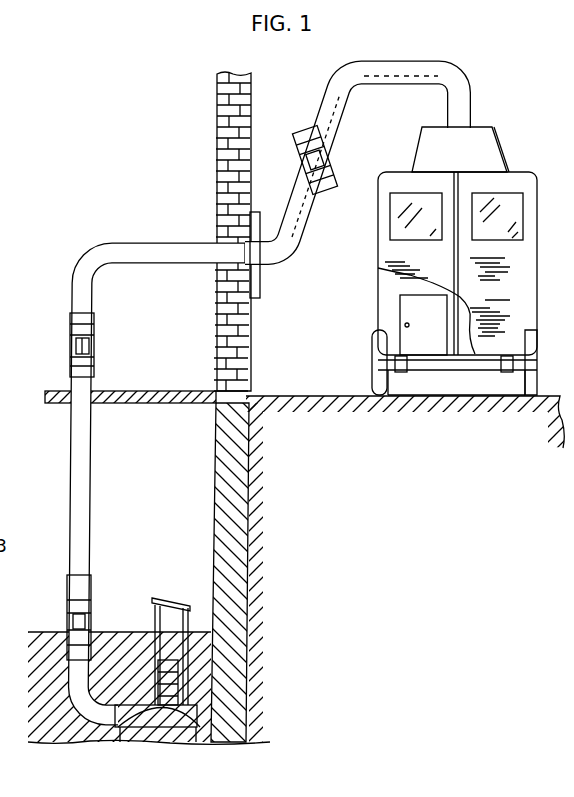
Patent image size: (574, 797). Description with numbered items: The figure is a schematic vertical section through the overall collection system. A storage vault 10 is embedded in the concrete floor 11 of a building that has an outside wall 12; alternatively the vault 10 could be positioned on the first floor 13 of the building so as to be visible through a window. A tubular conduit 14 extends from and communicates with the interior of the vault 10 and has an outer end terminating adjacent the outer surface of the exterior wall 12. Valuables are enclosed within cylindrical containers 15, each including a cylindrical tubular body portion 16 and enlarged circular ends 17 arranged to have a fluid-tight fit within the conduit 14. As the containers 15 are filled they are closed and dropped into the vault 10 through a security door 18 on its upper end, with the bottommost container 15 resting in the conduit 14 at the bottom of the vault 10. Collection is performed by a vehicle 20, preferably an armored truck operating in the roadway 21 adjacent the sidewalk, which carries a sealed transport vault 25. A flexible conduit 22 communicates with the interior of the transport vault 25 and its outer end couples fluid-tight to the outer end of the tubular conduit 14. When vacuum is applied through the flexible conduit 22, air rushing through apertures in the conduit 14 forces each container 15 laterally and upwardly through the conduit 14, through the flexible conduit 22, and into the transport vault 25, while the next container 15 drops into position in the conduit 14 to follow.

The storage vault 10 is at (143, 596).
The concrete floor 11 is at (98, 632).
The outside wall 12 is at (253, 340).
The first floor 13 is at (112, 389).
The tubular conduit 14 is at (92, 480).
The cylindrical container 15 is at (72, 348).
The cylindrical tubular body portion 16 is at (168, 717).
The enlarged circular end 17 is at (137, 728).
The security door 18 is at (173, 603).
The vehicle 20 is at (541, 257).
The roadway 21 is at (431, 396).
The flexible conduit 22 is at (421, 70).
The transport vault 25 is at (441, 325).